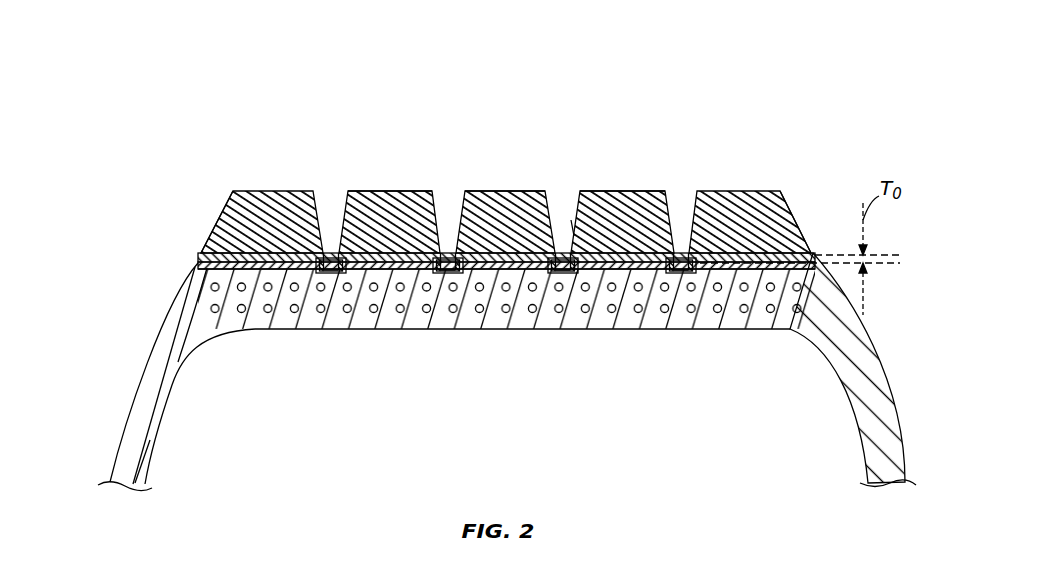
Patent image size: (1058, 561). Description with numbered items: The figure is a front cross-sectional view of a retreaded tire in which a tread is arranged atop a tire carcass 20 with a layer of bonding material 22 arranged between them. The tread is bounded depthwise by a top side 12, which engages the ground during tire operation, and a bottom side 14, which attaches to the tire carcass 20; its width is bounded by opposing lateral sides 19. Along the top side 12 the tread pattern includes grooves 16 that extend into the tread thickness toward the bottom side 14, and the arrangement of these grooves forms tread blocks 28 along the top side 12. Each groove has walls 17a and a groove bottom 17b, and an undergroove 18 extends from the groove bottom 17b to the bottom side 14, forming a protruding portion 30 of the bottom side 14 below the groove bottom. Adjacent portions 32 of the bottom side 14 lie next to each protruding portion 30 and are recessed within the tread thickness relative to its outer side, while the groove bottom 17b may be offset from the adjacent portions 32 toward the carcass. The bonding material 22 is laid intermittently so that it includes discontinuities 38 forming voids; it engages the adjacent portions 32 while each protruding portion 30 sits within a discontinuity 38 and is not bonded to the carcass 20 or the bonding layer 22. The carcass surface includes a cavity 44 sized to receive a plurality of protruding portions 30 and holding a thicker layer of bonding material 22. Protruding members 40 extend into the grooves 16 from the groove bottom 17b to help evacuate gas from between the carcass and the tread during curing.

The top side 12 is at (735, 190).
The bottom side 14 is at (727, 265).
The grooves 16 is at (320, 186).
The groove sidewall 17a is at (553, 197).
The groove bottom 17b is at (579, 224).
The undergroove 18 is at (678, 257).
The lateral sides 19 is at (215, 221).
The tire carcass 20 is at (285, 327).
The bonding material 22 is at (200, 257).
The tread blocks 28 is at (368, 191).
The protruding portion 30 is at (463, 276).
The adjacent portions 32 is at (276, 286).
The discontinuities 38 is at (548, 277).
The protruding members 40 is at (333, 252).
The cavity 44 is at (340, 274).